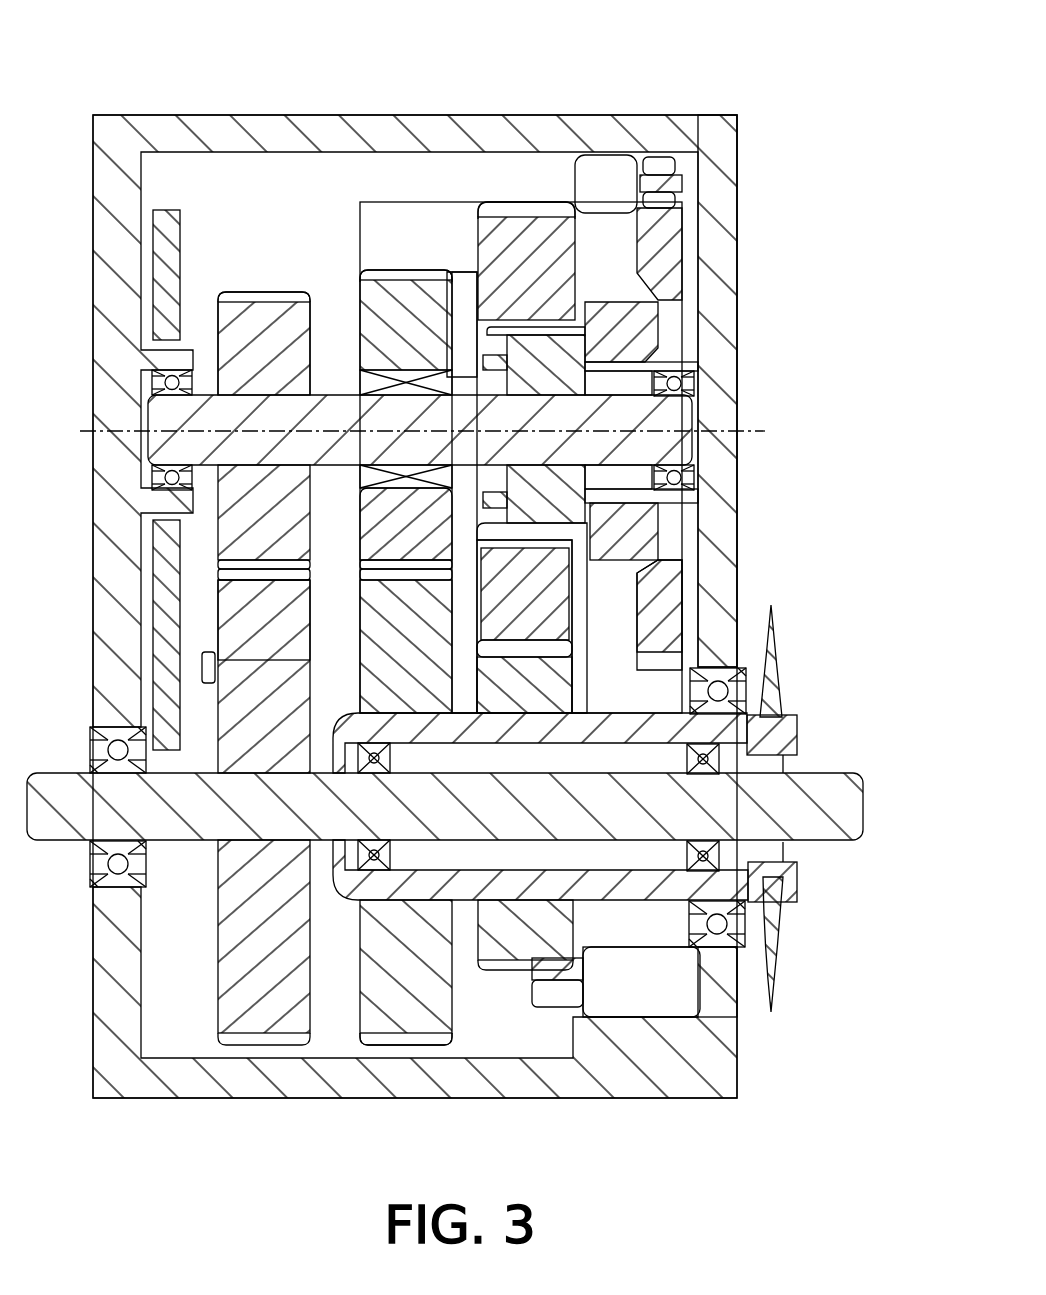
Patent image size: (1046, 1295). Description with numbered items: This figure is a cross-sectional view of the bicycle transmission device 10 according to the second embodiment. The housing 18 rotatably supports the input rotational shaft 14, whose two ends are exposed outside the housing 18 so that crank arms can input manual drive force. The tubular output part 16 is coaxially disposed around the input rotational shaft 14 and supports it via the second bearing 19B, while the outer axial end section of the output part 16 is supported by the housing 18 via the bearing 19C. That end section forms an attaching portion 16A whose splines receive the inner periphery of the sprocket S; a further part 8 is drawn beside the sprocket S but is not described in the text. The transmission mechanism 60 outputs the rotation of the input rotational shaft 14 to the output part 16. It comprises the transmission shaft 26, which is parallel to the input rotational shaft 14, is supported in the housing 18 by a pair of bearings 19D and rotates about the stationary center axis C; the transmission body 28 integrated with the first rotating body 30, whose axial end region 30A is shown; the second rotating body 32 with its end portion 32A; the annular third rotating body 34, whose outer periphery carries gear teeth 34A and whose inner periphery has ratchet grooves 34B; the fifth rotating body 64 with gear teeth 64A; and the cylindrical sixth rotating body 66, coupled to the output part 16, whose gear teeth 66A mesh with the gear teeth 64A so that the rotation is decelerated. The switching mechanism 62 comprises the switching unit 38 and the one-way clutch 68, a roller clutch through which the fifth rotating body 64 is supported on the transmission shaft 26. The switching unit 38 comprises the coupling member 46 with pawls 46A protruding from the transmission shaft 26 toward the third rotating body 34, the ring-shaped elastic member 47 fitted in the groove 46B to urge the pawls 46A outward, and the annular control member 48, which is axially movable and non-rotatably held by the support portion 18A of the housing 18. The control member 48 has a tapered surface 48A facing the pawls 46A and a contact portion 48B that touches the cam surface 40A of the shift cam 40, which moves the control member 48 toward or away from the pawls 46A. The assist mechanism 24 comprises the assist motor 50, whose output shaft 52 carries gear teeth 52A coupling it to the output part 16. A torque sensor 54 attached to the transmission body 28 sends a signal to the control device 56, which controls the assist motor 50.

The bicycle transmission device 10 is at (721, 70).
The housing 18 is at (738, 152).
The support portion 18A is at (737, 494).
The center axis C is at (766, 431).
The transmission shaft 26 is at (337, 395).
The input rotational shaft 14 is at (835, 774).
The second rotating body 32 is at (218, 302).
The first rotor core end 32A is at (280, 292).
The first rotating body 30 is at (310, 640).
The transmission body 28 is at (315, 650).
The second rotor core end 30A is at (285, 1058).
The fifth rotating body 64 is at (360, 286).
The gear teeth 64A is at (404, 270).
The one-way clutch 68 is at (360, 494).
The sixth rotating body 66 is at (452, 995).
The gear teeth 66A is at (398, 1058).
The control device 56 is at (180, 232).
The torque sensor 54 is at (202, 656).
The third rotating body 34 is at (578, 250).
The gear teeth 34A is at (500, 206).
The grooves 34B is at (462, 276).
The switching mechanism 62 is at (560, 178).
The shift cam 40 is at (682, 228).
The tapered surface 48A is at (606, 322).
The contact portion 48B is at (698, 326).
The coupling member 46 is at (698, 478).
The groove 46B is at (480, 352).
The elastic member 47 is at (490, 508).
The control member 48 is at (658, 530).
The cam surface 40A is at (682, 576).
The pawls 46A is at (582, 545).
The switching unit 38 is at (600, 638).
The output shaft 52 is at (545, 980).
The gear teeth 52A is at (575, 1007).
The assist motor 50 is at (612, 945).
The assist mechanism 24 is at (632, 1118).
The output part 16 is at (776, 690).
The sprocket S is at (784, 935).
The attaching portion 16A is at (792, 720).
The boss 8 is at (797, 878).
The bearings 19D is at (152, 382).
The second bearing 19B is at (720, 856).
The bearing 19C is at (746, 678).
The transmission mechanism 60 is at (343, 222).